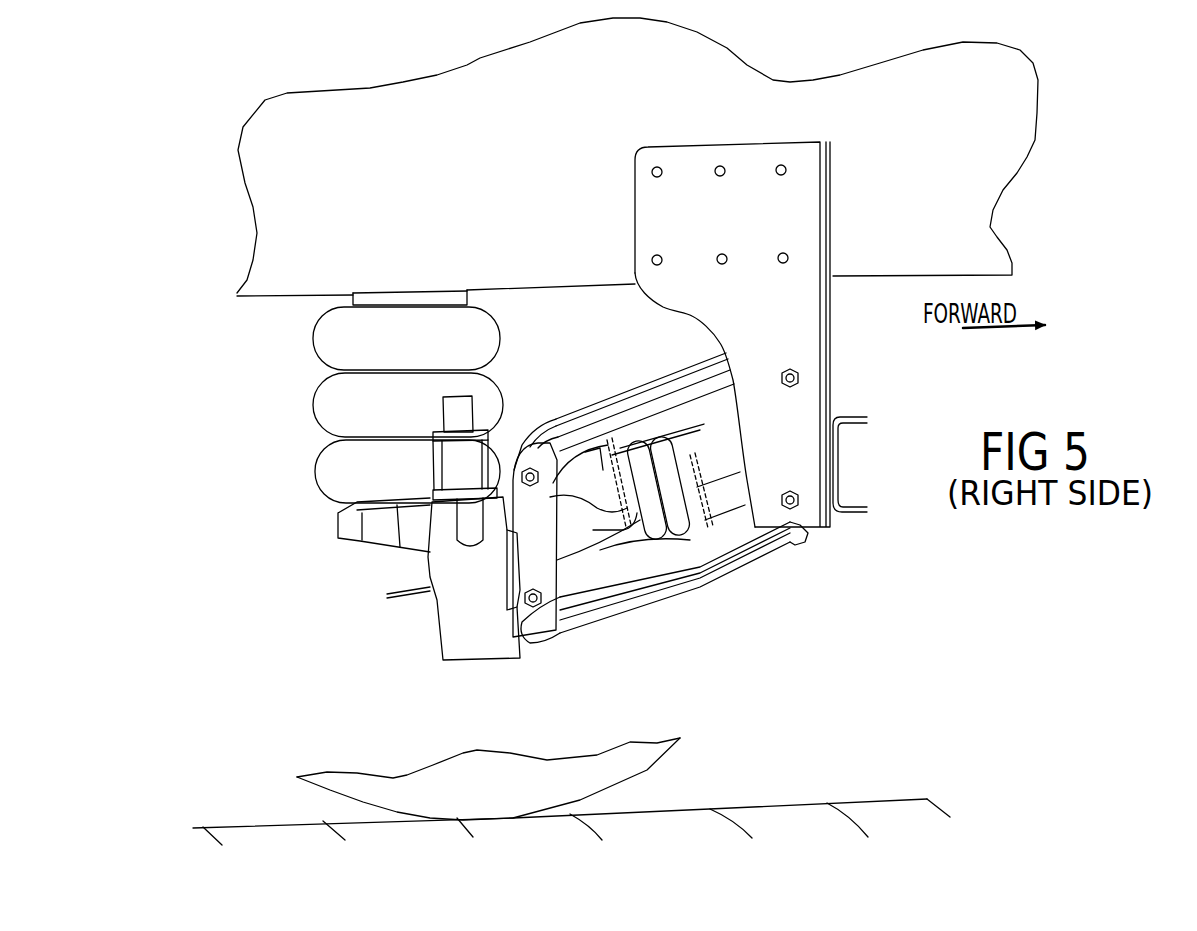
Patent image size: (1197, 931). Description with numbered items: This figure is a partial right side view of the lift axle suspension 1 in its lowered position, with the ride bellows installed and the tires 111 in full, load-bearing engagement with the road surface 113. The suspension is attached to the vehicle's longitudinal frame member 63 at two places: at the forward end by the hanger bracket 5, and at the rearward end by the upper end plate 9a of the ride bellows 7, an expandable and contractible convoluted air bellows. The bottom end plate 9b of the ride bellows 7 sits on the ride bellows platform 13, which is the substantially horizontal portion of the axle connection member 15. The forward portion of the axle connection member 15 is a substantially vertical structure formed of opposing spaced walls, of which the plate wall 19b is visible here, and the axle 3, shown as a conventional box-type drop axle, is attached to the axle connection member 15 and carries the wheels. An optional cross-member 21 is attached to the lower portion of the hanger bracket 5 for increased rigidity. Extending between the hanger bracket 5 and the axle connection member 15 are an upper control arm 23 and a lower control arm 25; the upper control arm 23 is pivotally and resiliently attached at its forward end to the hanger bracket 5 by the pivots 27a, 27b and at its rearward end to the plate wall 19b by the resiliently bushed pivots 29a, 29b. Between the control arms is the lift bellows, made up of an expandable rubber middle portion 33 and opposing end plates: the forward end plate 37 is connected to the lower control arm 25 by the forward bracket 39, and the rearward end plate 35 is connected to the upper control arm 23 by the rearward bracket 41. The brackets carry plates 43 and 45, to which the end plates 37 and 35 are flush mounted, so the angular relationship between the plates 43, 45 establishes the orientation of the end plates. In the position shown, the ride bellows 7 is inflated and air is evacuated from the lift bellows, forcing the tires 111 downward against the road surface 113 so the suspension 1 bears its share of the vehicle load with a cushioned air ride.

The lift axle suspension 1 is at (262, 506).
The axle 3 is at (497, 635).
The hanger bracket 5 is at (780, 331).
The ride bellows 7 is at (395, 418).
The upper end plate 9a is at (380, 300).
The bottom end plate 9b is at (338, 514).
The ride bellows platform 13 is at (355, 552).
The axle connection member 15 is at (536, 549).
The plate wall 19b is at (552, 527).
The cross-member 21 is at (848, 510).
The upper control arm 23 is at (624, 411).
The lower control arm 25 is at (664, 582).
The pivot 27a is at (800, 377).
The pivot 27b is at (797, 510).
The resiliently bushed pivot 29a is at (530, 466).
The resiliently bushed pivot 29b is at (533, 610).
The expandable rubber middle portion 33 is at (649, 432).
The rearward end plate 35 is at (660, 537).
The forward end plate 37 is at (686, 453).
The forward bracket 39 is at (676, 483).
The rearward bracket 41 is at (580, 467).
The plate 43 is at (683, 463).
The plate 45 is at (633, 520).
The longitudinal frame member 63 is at (950, 134).
The tires 111 is at (515, 797).
The road surface 113 is at (800, 800).